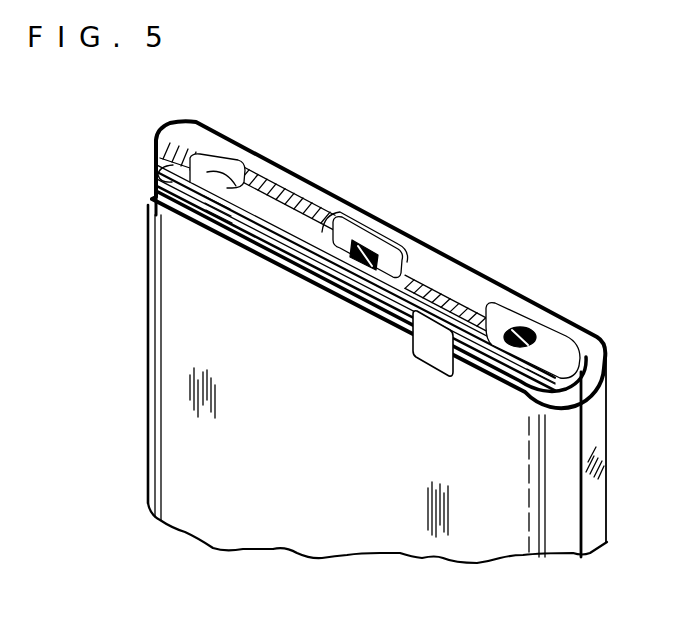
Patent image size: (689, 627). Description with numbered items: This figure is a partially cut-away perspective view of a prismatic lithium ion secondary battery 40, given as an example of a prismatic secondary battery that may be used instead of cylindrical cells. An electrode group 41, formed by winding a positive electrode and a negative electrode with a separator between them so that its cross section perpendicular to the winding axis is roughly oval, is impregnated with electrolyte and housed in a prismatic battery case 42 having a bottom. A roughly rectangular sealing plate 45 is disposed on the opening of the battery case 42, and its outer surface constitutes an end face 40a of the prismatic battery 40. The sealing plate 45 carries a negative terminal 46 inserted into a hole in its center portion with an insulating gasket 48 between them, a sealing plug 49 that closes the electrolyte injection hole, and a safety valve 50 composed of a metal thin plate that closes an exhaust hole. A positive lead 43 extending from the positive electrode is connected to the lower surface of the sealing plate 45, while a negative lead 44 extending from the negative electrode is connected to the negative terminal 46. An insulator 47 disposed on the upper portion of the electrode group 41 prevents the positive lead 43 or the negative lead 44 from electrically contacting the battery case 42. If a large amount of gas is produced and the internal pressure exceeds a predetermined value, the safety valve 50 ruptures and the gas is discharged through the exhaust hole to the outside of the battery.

The prismatic lithium ion secondary battery 40 is at (443, 130).
The end face 40a is at (447, 270).
The electrode group 41 is at (183, 332).
The battery case 42 is at (593, 407).
The positive lead 43 is at (445, 321).
The negative lead 44 is at (293, 237).
The sealing plate 45 is at (274, 188).
The negative terminal 46 is at (380, 240).
The insulator 47 is at (167, 164).
The insulating gasket 48 is at (330, 222).
The sealing plug 49 is at (541, 311).
The safety valve 50 is at (215, 173).